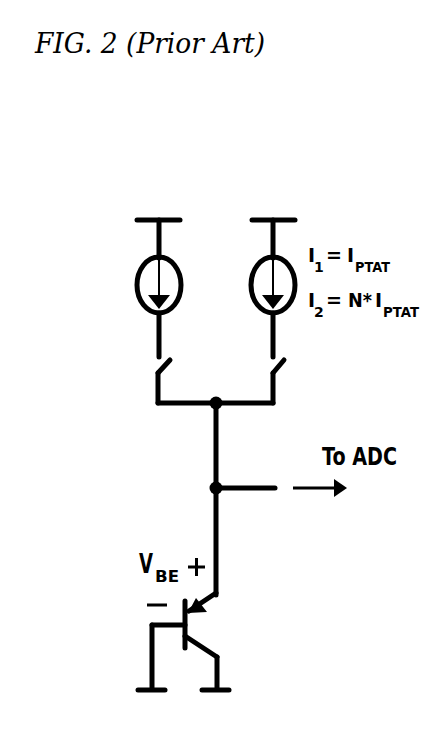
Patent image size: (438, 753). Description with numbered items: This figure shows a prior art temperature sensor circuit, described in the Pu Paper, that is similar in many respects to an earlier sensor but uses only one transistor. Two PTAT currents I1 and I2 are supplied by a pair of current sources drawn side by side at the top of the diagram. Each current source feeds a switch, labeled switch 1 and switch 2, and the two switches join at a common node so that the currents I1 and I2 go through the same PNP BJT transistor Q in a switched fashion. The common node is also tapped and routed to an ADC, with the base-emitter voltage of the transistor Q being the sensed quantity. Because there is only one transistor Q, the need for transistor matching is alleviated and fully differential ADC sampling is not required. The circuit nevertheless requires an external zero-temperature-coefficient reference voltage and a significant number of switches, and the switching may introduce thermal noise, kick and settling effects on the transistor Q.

The first switch 1 is at (172, 377).
The second switch 2 is at (288, 377).
The PTAT current I1 is at (147, 288).
The PTAT current I2 is at (261, 288).
The PNP BJT transistor Q is at (190, 641).